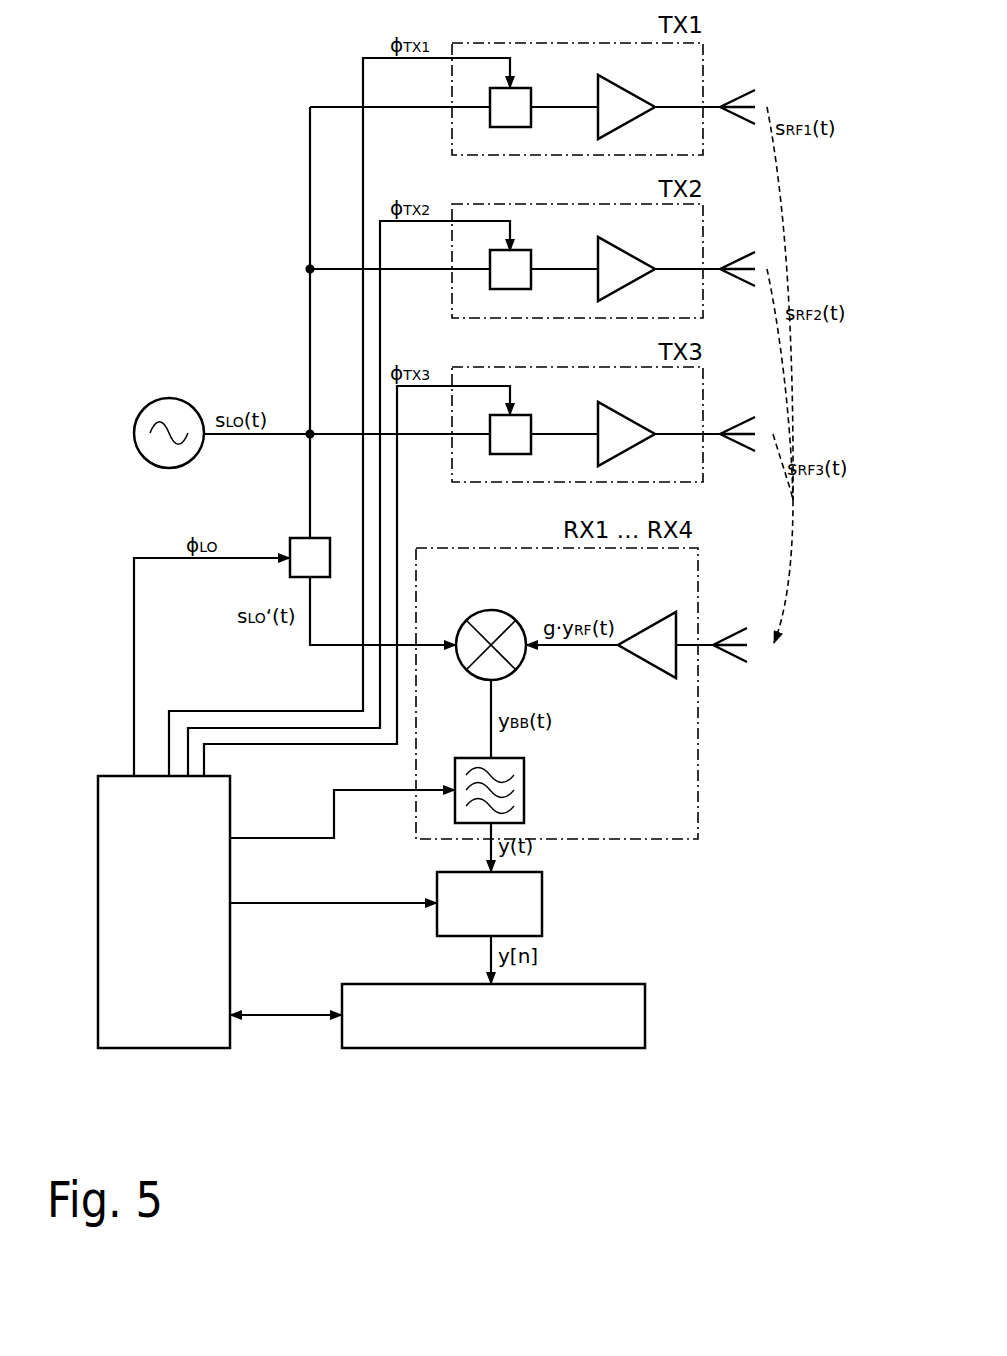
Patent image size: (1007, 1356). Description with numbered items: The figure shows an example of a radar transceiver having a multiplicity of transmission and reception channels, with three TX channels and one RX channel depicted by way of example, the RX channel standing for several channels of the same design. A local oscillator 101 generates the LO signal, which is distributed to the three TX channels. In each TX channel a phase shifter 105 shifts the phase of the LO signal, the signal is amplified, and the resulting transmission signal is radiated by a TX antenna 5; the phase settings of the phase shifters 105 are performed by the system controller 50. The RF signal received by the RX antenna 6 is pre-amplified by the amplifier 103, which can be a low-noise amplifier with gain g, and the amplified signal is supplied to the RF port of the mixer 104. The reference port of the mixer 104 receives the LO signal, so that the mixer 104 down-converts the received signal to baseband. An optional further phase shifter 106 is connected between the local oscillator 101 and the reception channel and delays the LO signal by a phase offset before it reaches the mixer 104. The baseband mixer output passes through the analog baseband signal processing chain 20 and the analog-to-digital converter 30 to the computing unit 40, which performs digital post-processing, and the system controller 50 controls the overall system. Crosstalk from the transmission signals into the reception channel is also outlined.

The TX antenna 5 is at (733, 91).
The RX antenna 6 is at (742, 660).
The analog baseband signal processing chain 20 is at (524, 790).
The analog-to-digital converter 30 is at (489, 904).
The computing unit 40 is at (493, 1016).
The system controller 50 is at (164, 912).
The local oscillator 101 is at (146, 400).
The amplifier 103 is at (641, 93).
The mixer 104 is at (507, 609).
The phase shifter 105 is at (532, 91).
The phase shifter 106 is at (289, 539).